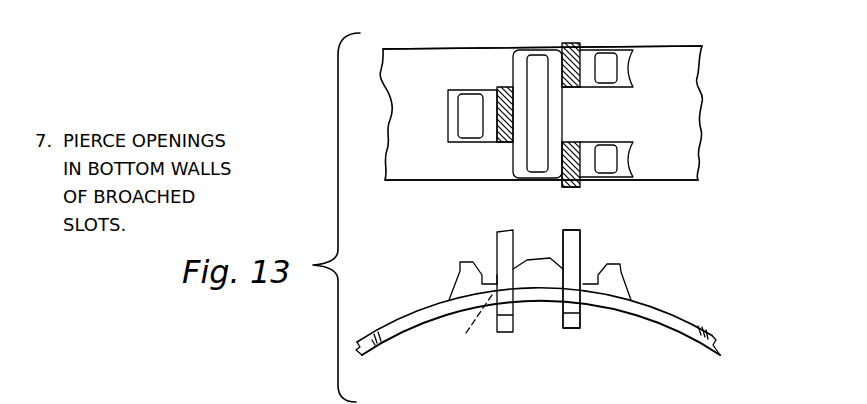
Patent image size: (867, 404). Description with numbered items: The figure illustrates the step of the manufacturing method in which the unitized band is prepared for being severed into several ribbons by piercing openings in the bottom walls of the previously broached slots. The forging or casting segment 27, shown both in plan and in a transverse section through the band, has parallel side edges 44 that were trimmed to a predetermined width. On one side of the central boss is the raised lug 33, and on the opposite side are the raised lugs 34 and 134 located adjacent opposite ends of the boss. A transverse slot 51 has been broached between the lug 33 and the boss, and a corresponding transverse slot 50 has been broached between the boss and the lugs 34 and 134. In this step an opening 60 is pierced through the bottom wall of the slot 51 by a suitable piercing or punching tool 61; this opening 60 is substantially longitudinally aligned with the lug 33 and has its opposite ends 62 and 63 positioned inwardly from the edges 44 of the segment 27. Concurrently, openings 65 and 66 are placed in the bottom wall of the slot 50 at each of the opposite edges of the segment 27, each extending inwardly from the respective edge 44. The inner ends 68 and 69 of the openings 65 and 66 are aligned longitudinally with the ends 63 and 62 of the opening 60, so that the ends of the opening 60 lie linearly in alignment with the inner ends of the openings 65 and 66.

The forging or casting segment 27 is at (666, 56).
The raised boss or lug 33 is at (463, 121).
The raised boss or lug 34 is at (612, 160).
The raised boss or lug 134 is at (607, 68).
The parallel side edges 44 is at (457, 49).
The slot 50 is at (607, 265).
The slot 51 is at (497, 275).
The opening 60 is at (497, 112).
The piercing or punching tool 61 is at (497, 96).
The end of opening 62 is at (510, 87).
The end of opening 63 is at (505, 143).
The opening 65 is at (562, 166).
The opening 66 is at (560, 62).
The inner end of opening 68 is at (572, 142).
The inner end of opening 69 is at (571, 87).